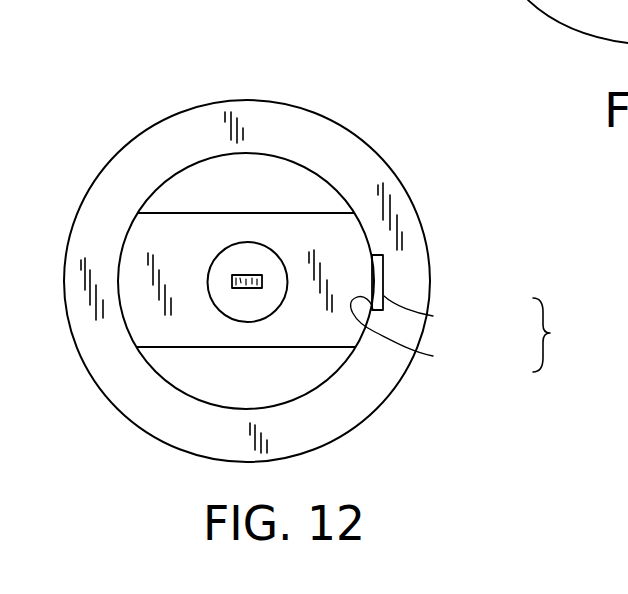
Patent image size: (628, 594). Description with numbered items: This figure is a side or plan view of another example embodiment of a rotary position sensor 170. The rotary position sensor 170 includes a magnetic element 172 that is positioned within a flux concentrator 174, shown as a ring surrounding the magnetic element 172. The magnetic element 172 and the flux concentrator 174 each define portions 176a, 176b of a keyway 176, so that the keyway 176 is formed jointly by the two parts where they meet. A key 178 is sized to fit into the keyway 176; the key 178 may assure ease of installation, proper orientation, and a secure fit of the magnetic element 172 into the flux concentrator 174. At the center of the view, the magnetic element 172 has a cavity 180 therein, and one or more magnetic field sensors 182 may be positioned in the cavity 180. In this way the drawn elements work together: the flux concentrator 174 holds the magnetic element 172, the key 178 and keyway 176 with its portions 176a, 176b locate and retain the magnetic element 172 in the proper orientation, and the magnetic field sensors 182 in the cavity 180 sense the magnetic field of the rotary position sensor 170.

The rotary position sensor 170 is at (364, 104).
The magnetic element 172 is at (330, 230).
The flux concentrator 174 is at (352, 430).
The keyway 176 is at (573, 335).
The portion of the keyway 176a is at (433, 316).
The portion of the keyway 176b is at (433, 356).
The key 178 is at (374, 283).
The cavity 180 is at (233, 244).
The magnetic field sensor 182 is at (247, 275).